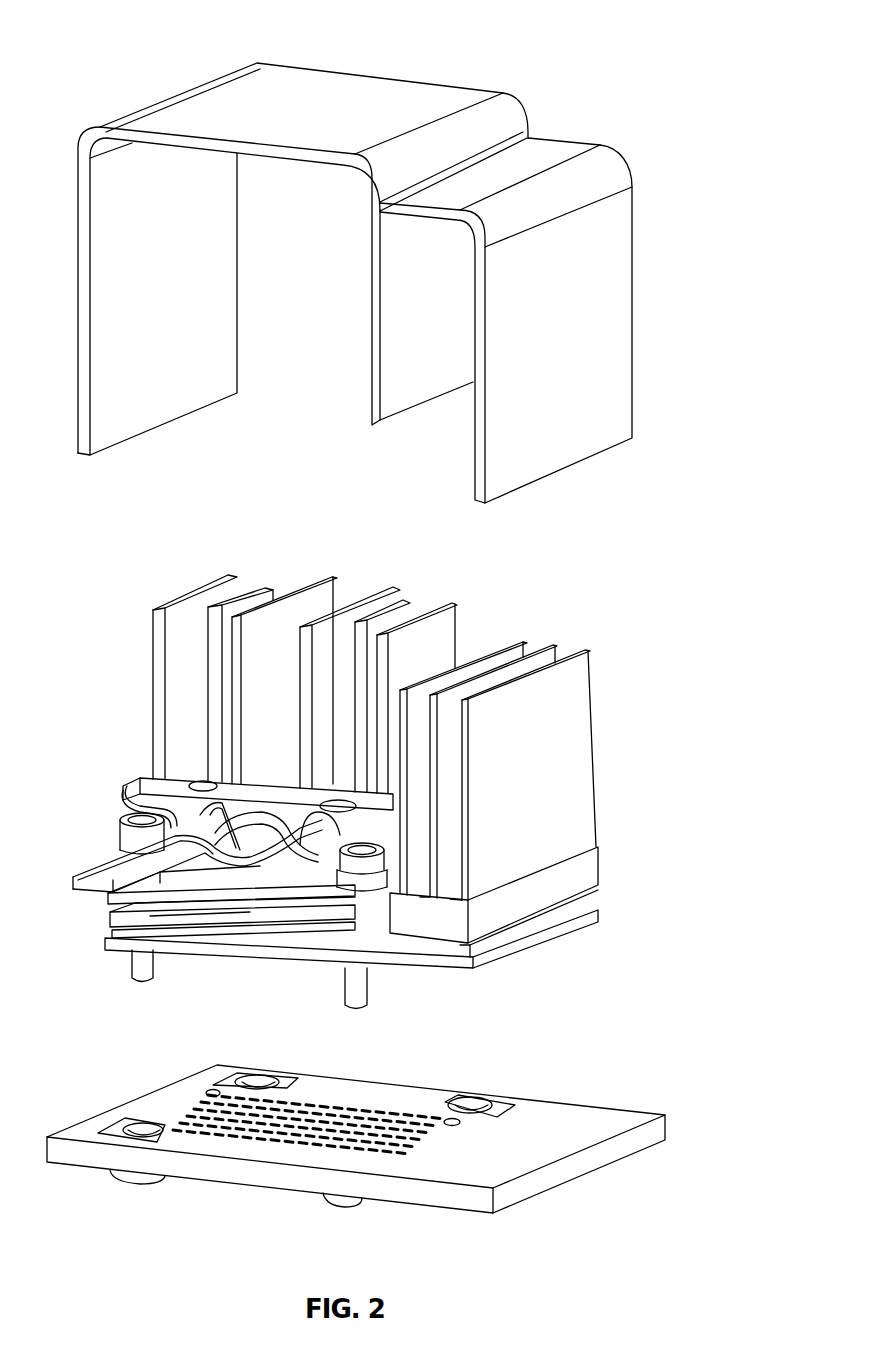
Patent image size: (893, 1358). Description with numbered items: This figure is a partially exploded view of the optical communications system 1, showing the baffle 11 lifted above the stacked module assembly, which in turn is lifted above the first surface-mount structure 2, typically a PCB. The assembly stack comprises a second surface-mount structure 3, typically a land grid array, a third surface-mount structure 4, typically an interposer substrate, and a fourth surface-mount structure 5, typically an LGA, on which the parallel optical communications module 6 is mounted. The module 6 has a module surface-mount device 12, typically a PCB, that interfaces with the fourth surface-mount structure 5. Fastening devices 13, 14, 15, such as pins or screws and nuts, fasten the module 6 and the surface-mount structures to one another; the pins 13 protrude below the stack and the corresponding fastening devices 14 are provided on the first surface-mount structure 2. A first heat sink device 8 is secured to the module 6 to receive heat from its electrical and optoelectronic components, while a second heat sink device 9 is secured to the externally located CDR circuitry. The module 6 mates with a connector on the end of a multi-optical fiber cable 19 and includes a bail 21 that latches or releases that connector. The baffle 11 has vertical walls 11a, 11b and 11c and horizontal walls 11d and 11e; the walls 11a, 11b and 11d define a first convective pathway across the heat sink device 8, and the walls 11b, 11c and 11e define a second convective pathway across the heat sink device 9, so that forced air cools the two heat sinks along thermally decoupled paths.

The optical communications system 1 is at (85, 46).
The first surface-mount structure 2 is at (618, 1117).
The second surface-mount structure 3 is at (232, 929).
The third surface-mount structure 4 is at (304, 931).
The fourth surface-mount structure 5 is at (304, 920).
The parallel optical communications module 6 is at (392, 900).
The first heat sink device 8 is at (265, 586).
The second heat sink device 9 is at (572, 650).
The baffle 11 is at (393, 283).
The vertical wall 11a is at (225, 293).
The vertical wall 11b is at (385, 298).
The vertical wall 11c is at (623, 268).
The horizontal wall 11d is at (268, 153).
The horizontal wall 11e is at (423, 210).
The module surface-mount device 12 is at (203, 897).
The fastening device 13 is at (138, 955).
The fastening device 14 is at (123, 1177).
The fastening device 15 is at (130, 814).
The multi-optical fiber cable 19 is at (97, 873).
The bail 21 is at (140, 786).